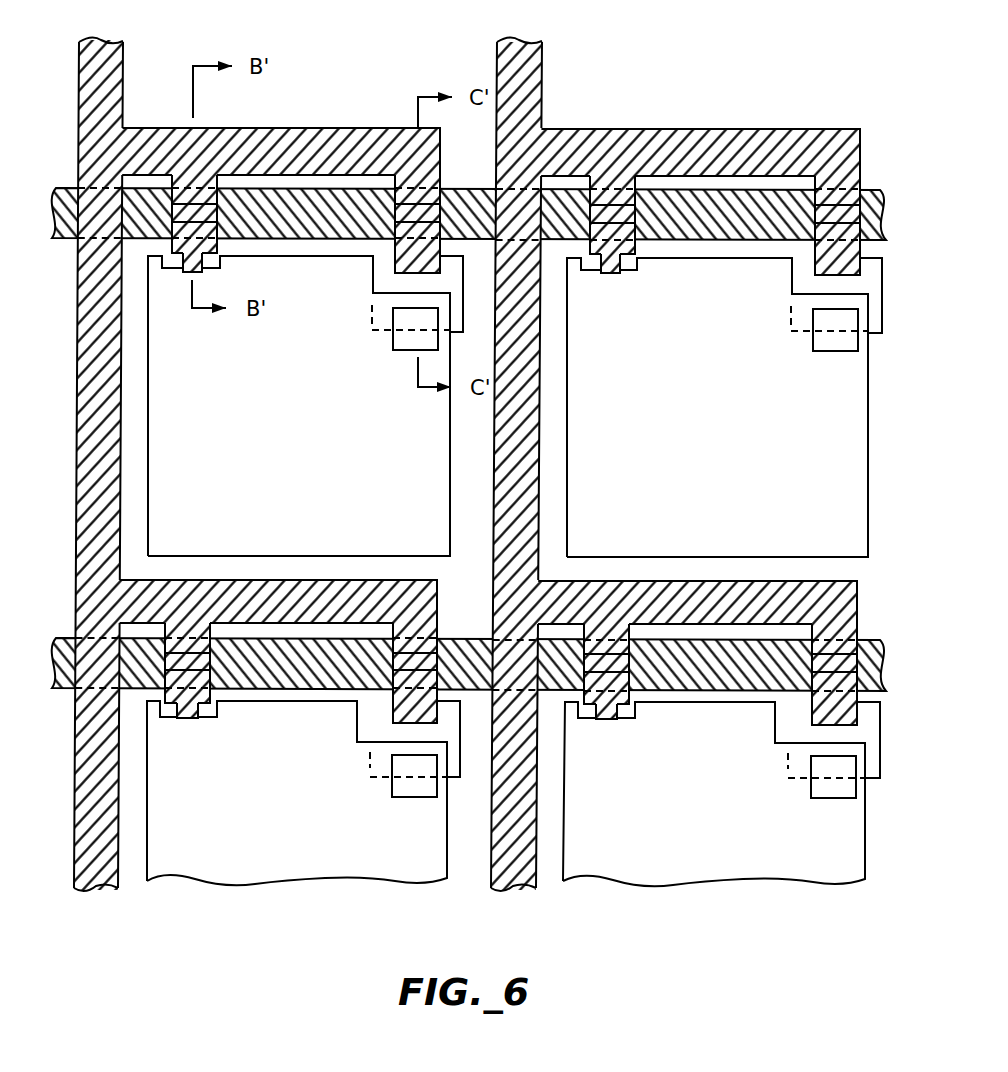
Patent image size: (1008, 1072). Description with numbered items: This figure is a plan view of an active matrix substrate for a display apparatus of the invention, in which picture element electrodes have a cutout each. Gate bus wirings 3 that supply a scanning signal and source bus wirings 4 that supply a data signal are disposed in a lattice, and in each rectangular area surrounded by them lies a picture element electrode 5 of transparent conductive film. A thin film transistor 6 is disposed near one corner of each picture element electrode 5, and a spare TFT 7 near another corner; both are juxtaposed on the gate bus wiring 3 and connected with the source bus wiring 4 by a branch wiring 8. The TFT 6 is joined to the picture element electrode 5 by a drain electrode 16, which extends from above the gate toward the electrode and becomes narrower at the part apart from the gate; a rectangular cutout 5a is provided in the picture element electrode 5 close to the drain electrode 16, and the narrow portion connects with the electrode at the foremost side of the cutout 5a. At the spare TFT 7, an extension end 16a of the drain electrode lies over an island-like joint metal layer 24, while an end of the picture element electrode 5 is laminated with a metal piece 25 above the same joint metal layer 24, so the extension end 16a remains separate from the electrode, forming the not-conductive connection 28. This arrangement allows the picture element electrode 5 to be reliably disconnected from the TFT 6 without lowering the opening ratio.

The gate bus wiring 3 is at (881, 190).
The source bus wiring 4 is at (117, 66).
The picture element electrode 5 is at (301, 477).
The cutout 5a is at (176, 271).
The thin film transistor 6 is at (234, 207).
The spare TFT 7 is at (386, 205).
The branch wiring 8 is at (299, 142).
The drain electrode 16 is at (213, 247).
The extension end of drain electrode 16a is at (397, 251).
The joint metal layer 24 is at (372, 283).
The metal piece 25 is at (401, 338).
The connection 28 is at (791, 318).